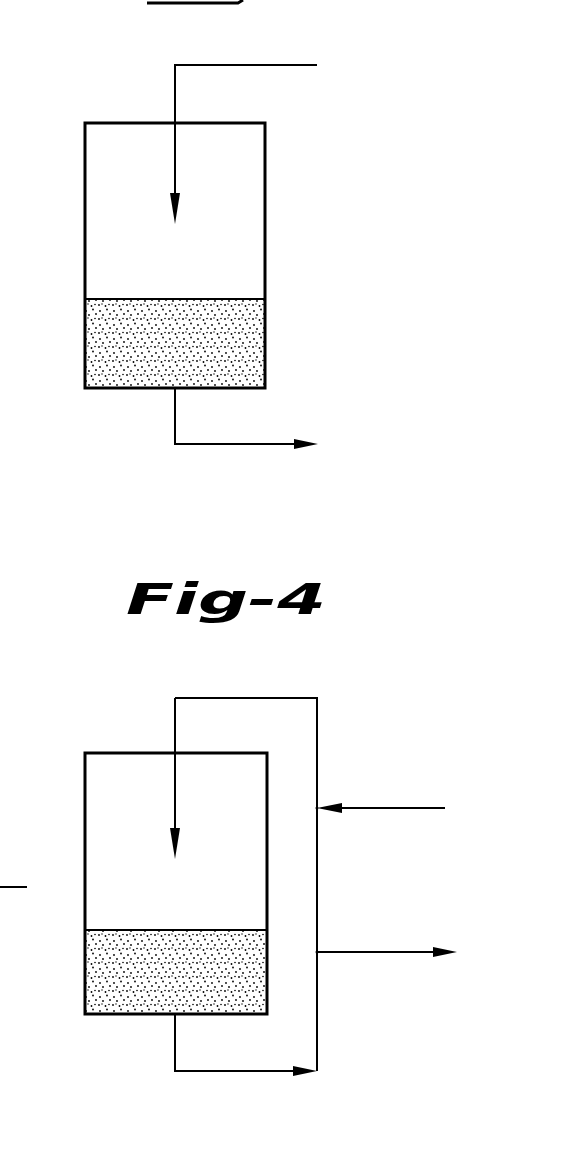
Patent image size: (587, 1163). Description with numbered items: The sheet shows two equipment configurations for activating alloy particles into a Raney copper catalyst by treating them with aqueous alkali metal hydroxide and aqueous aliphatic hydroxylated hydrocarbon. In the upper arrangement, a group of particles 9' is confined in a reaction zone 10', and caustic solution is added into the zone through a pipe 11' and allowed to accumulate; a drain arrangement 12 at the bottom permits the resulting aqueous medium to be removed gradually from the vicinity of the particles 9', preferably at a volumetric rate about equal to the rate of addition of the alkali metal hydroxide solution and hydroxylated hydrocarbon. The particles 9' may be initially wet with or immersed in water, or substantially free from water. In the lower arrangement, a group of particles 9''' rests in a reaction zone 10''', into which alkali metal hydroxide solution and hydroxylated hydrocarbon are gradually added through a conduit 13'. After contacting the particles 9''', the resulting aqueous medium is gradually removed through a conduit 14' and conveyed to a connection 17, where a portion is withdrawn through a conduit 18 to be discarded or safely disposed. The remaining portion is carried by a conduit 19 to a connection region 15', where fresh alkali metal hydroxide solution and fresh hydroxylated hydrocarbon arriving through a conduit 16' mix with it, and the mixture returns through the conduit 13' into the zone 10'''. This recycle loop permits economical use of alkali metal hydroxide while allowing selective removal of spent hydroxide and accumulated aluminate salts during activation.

In FIG. 2, the reaction zone 10' is at (205, 255).
In FIG. 2, the group of particles 9' is at (201, 343).
In FIG. 2, the pipe 11' is at (243, 144).
In FIG. 2, the drain arrangement 12 is at (251, 448).
In FIG. 4, the reaction zone 10''' is at (136, 883).
In FIG. 4, the group of particles 9''' is at (145, 971).
In FIG. 4, the conduit 13' is at (203, 778).
In FIG. 4, the conduit 14' is at (246, 1067).
In FIG. 4, the connection region 15' is at (297, 834).
In FIG. 4, the conduit 16' is at (381, 789).
In FIG. 4, the connection 17 is at (316, 956).
In FIG. 4, the conduit 18 is at (402, 955).
In FIG. 4, the conduit 19 is at (318, 883).